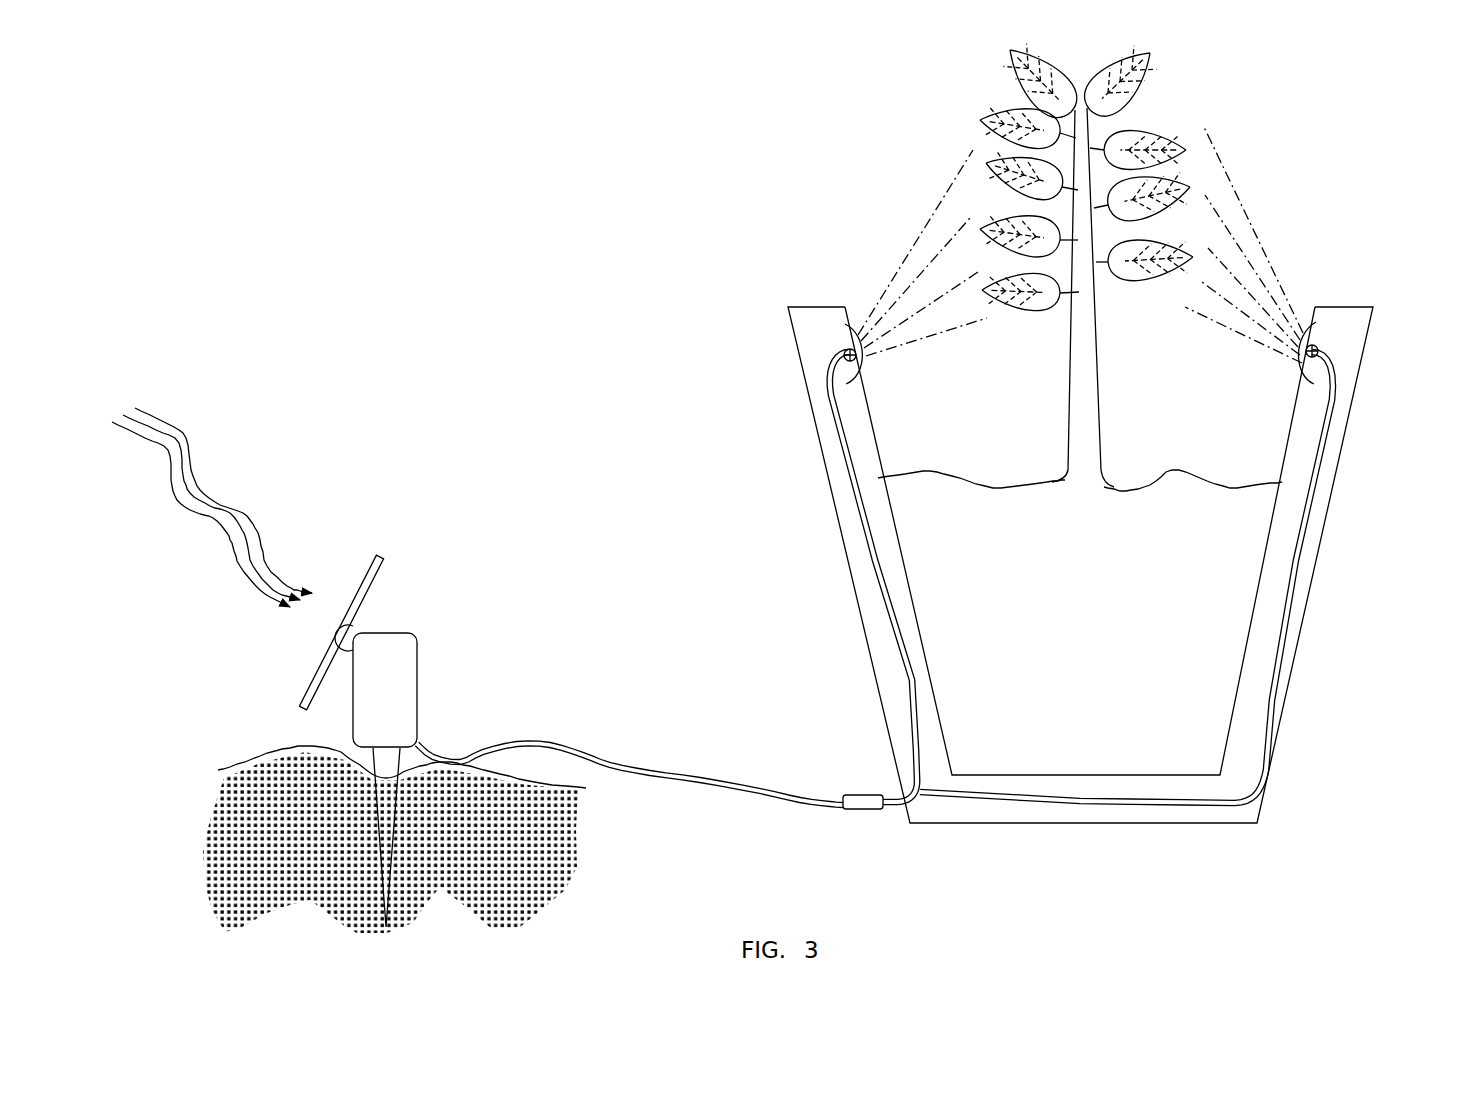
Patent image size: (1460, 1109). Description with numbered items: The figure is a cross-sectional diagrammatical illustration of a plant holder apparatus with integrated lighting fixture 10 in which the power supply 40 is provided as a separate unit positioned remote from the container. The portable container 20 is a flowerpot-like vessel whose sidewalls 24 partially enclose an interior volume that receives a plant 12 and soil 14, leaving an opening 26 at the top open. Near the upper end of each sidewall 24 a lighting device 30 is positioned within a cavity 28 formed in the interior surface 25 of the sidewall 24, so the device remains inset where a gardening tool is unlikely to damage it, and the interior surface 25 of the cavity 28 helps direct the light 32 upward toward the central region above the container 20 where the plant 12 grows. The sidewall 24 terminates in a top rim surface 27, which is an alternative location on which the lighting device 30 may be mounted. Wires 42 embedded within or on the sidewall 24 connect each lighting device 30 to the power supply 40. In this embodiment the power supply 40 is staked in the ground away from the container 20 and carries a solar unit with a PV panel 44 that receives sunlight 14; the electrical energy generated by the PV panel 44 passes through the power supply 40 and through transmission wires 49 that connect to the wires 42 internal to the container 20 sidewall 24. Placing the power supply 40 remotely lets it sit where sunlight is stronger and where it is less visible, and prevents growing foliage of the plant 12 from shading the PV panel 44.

The plant holder apparatus with integrated lighting fixture 10 is at (443, 227).
The plant 12 is at (1163, 106).
The soil 14 is at (243, 557).
The portable container 20 is at (1287, 693).
The sidewall 24 is at (1303, 573).
The interior surface 25 is at (877, 442).
The opening 26 is at (1046, 384).
The top rim surface 27 is at (817, 303).
The cavity 28 is at (872, 368).
The lighting device 30 is at (860, 318).
The light 32 is at (943, 247).
The power supply 40 is at (448, 744).
The wire 42 is at (883, 577).
The PV panel 44 is at (367, 593).
The transmission wires 49 is at (695, 772).